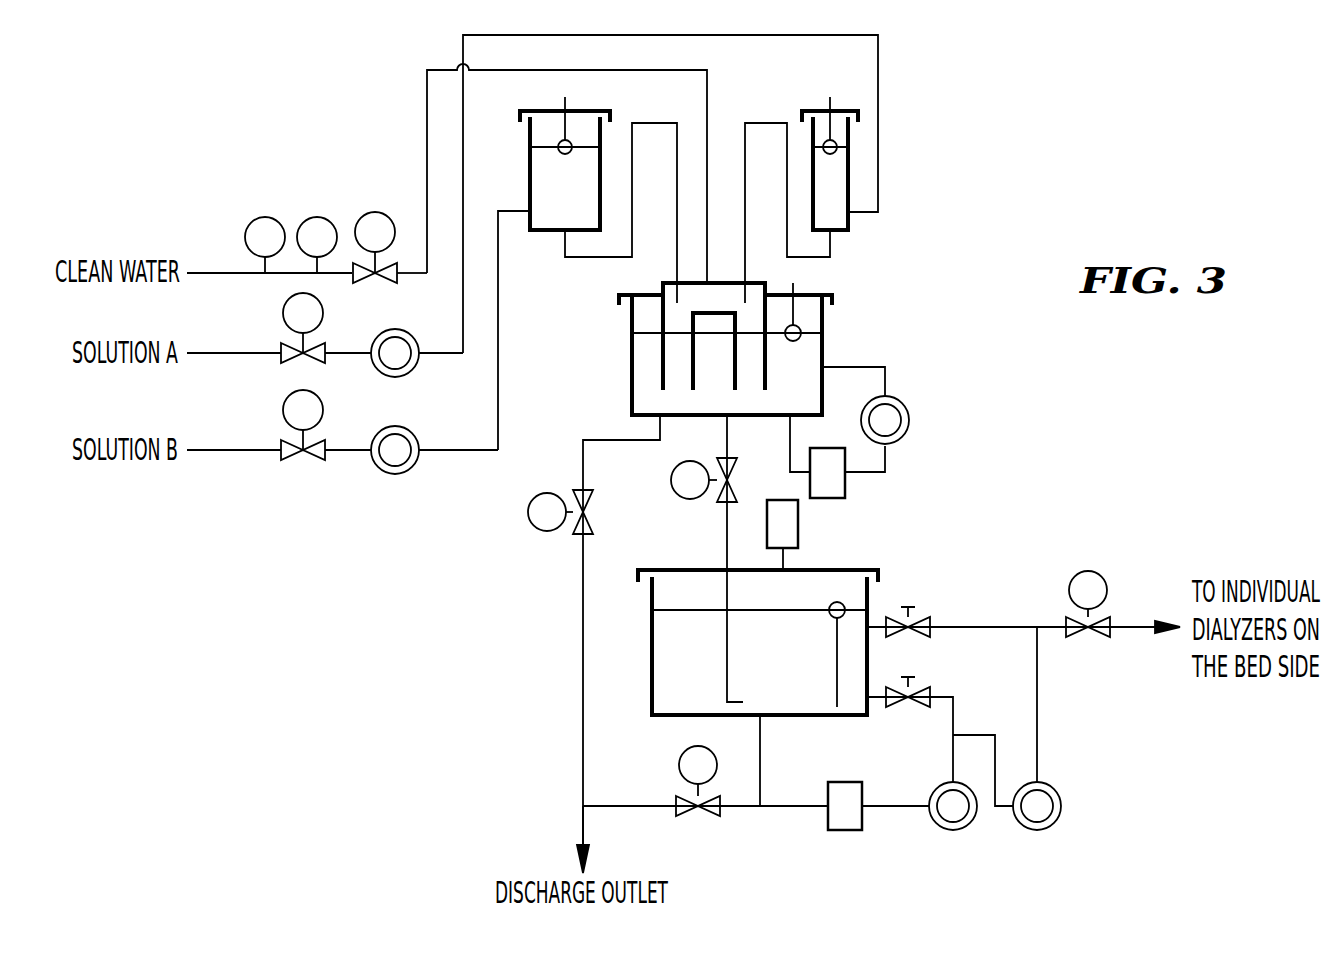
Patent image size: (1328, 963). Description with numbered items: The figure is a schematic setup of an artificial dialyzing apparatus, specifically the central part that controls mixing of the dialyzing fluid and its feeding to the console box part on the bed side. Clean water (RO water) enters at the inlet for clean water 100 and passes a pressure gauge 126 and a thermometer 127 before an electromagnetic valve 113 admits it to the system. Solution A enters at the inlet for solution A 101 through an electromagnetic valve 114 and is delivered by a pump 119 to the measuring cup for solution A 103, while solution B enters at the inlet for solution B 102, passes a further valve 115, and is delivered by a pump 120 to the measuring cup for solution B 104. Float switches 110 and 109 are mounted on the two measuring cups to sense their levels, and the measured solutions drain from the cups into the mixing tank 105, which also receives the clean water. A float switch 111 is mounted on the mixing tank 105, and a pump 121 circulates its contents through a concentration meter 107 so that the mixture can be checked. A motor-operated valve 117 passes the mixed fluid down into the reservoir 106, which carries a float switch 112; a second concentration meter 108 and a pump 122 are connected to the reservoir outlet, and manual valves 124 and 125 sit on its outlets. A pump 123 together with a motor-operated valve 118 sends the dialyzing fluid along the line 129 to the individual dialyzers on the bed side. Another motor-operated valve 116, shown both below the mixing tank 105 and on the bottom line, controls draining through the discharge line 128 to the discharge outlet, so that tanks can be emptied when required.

The inlet for clean water 100 is at (203, 271).
The inlet for solution A 101 is at (222, 353).
The inlet for solution B 102 is at (235, 450).
The measuring cup for solution A 103 is at (845, 225).
The measuring cup for solution B 104 is at (542, 228).
The mixing tank 105 is at (822, 345).
The reservoir 106 is at (878, 594).
The concentration meter 107 is at (845, 490).
The concentration meter 108 is at (828, 826).
The float switch 109 is at (565, 97).
The float switch 110 is at (830, 97).
The float switch 111 is at (793, 283).
The float switch 112 is at (830, 617).
The electromagnetic valve 113 is at (378, 216).
The electromagnetic valve 114 is at (322, 313).
The solution B valve 115 is at (322, 411).
The motor-operated valve 116 is at (531, 523).
The motor-operated valve 117 is at (674, 492).
The motor-operated valve 118 is at (1088, 571).
The pump 119 is at (413, 370).
The pump 120 is at (413, 470).
The pump 121 is at (905, 412).
The pump 122 is at (936, 828).
The pump 123 is at (1040, 832).
The manual valve 124 is at (930, 619).
The manual valve 125 is at (928, 690).
The pressure gauge 126 is at (258, 218).
The thermometer 127 is at (317, 217).
The discharge line 128 is at (583, 833).
The dialysate supply line 129 is at (1138, 627).